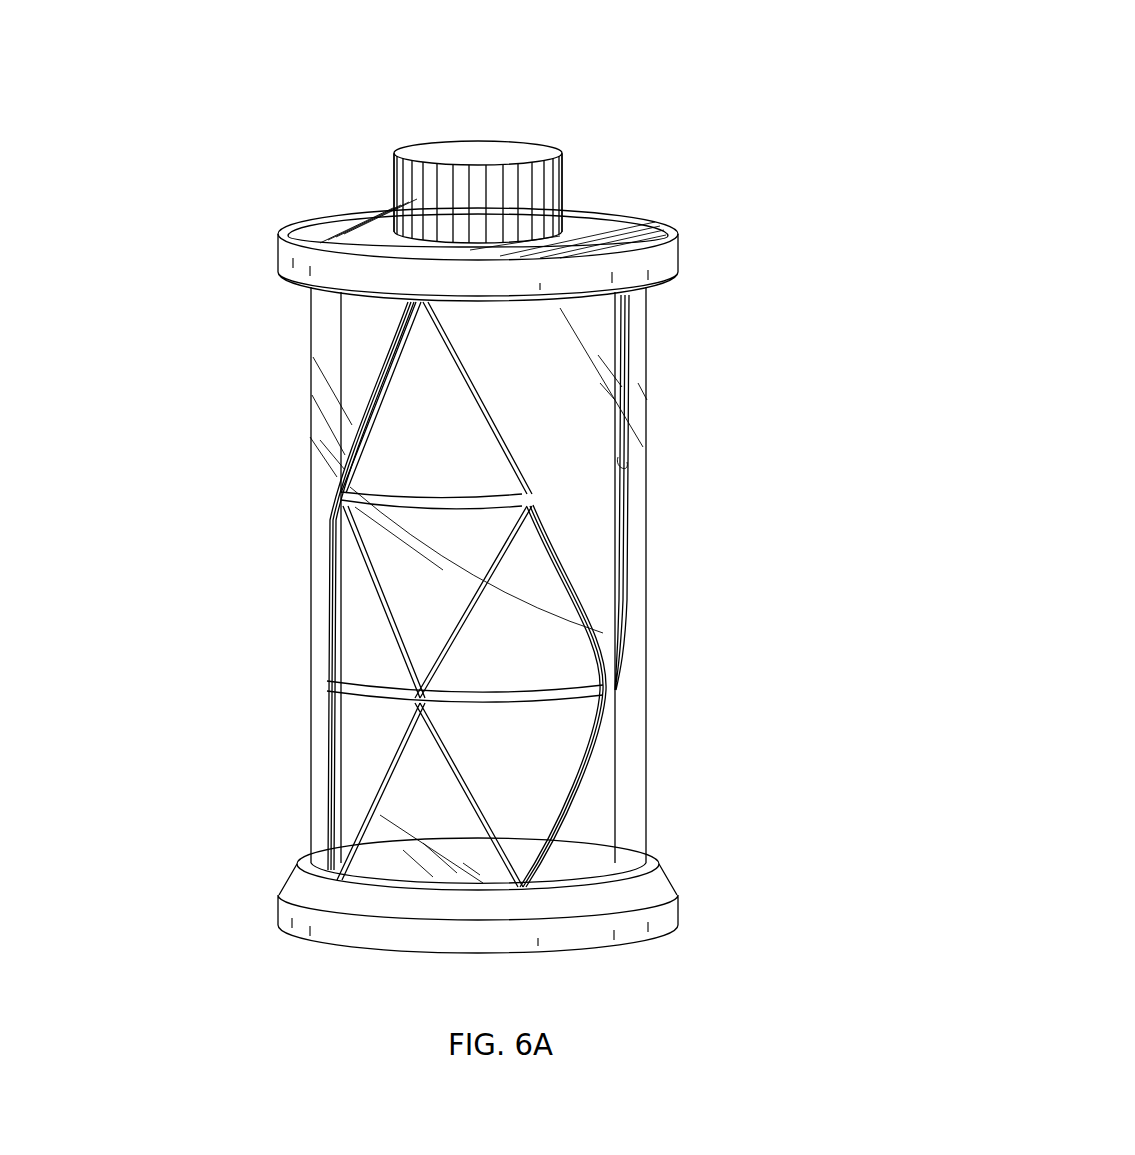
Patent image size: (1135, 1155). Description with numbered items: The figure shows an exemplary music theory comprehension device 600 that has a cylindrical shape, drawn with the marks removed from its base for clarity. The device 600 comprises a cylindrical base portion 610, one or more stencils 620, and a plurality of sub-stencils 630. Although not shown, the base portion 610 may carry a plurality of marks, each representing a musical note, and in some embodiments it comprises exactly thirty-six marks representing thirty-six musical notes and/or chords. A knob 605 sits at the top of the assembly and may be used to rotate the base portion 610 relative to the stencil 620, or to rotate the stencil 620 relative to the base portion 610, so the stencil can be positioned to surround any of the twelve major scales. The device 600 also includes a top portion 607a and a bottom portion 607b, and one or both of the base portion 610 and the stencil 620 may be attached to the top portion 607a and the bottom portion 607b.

The music theory comprehension device 600 is at (223, 508).
The knob 605 is at (557, 135).
The top portion 607a is at (670, 213).
The bottom portion 607b is at (680, 880).
The base portion 610 is at (383, 310).
The stencil 620 is at (578, 795).
The sub-stencils 630 is at (487, 592).